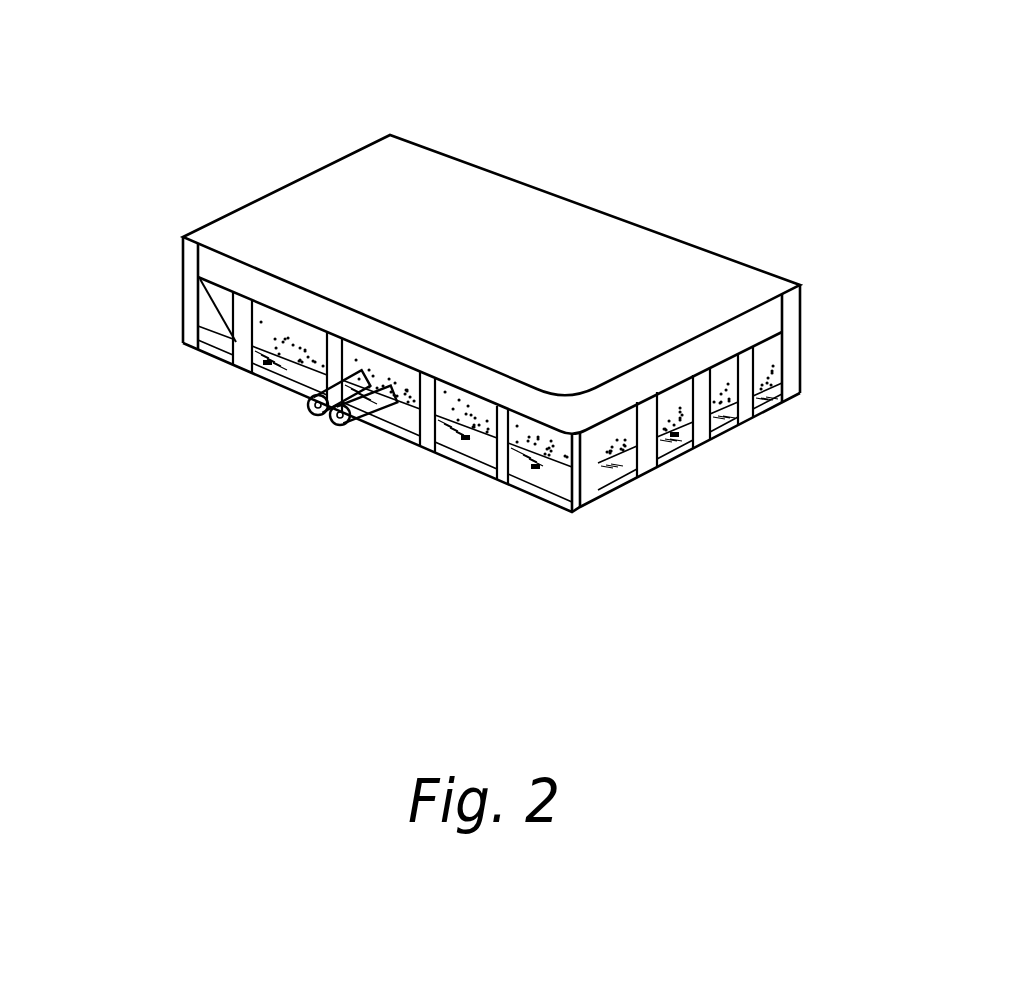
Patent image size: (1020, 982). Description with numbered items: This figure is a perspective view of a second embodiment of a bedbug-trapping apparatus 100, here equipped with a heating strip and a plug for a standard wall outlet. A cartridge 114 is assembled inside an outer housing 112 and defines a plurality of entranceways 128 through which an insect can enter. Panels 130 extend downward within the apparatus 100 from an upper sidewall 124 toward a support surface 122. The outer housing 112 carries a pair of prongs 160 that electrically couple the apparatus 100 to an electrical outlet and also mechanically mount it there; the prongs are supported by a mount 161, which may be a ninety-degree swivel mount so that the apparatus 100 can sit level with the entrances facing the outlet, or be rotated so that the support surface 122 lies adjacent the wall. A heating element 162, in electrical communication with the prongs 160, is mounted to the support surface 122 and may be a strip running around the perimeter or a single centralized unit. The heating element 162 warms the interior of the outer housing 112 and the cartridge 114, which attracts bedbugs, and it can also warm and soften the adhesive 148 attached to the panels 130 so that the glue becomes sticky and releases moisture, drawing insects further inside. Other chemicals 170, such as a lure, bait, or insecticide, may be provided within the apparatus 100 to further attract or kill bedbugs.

The apparatus 100 is at (354, 90).
The outer housing 112 is at (688, 285).
The cartridge 114 is at (234, 343).
The support surface 122 is at (463, 460).
The upper sidewall 124 is at (760, 323).
The entranceways 128 is at (432, 444).
The panels 130 is at (238, 313).
The adhesive 148 is at (272, 338).
The prongs 160 is at (330, 412).
The mount 161 is at (390, 415).
The heating element 162 is at (273, 373).
The chemicals 170 is at (267, 363).